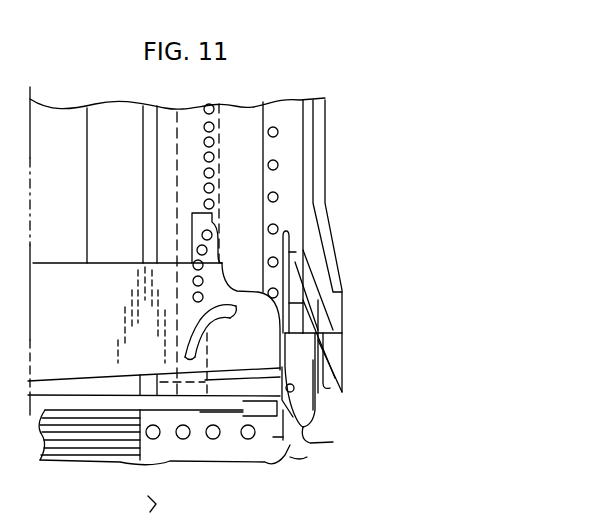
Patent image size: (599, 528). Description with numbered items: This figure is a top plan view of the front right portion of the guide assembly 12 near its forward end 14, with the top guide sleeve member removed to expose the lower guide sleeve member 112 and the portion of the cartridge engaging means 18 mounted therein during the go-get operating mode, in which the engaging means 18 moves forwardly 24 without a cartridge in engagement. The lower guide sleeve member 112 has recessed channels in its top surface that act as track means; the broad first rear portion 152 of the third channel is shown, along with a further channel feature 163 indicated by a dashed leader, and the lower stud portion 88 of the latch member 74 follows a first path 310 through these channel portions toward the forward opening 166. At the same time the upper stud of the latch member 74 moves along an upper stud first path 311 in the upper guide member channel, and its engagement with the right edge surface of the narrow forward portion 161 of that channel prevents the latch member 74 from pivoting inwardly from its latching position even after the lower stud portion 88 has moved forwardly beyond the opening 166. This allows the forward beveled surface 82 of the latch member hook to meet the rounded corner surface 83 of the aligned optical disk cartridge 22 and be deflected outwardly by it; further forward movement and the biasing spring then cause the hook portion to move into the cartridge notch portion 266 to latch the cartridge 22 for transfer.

The guide assembly 12 is at (326, 208).
The forward end 14 is at (317, 393).
The cartridge engaging means 18 is at (98, 323).
The optical disk cartridge 22 is at (164, 437).
The forward direction 24 is at (199, 146).
The latch member 74 is at (304, 346).
The beveled surface 82 is at (341, 442).
The rounded corner surface 83 is at (247, 392).
The lower stud portion 88 is at (232, 316).
The lower guide sleeve member 112 is at (126, 155).
The first rear portion of third channel 152 is at (290, 153).
The narrow forward portion of channel 161 is at (140, 371).
The dashed partition line 163 is at (190, 190).
The forward opening 166 is at (313, 410).
The second notch portion 266 is at (330, 465).
The first path 310 is at (281, 132).
The upper stud first path 311 is at (214, 153).